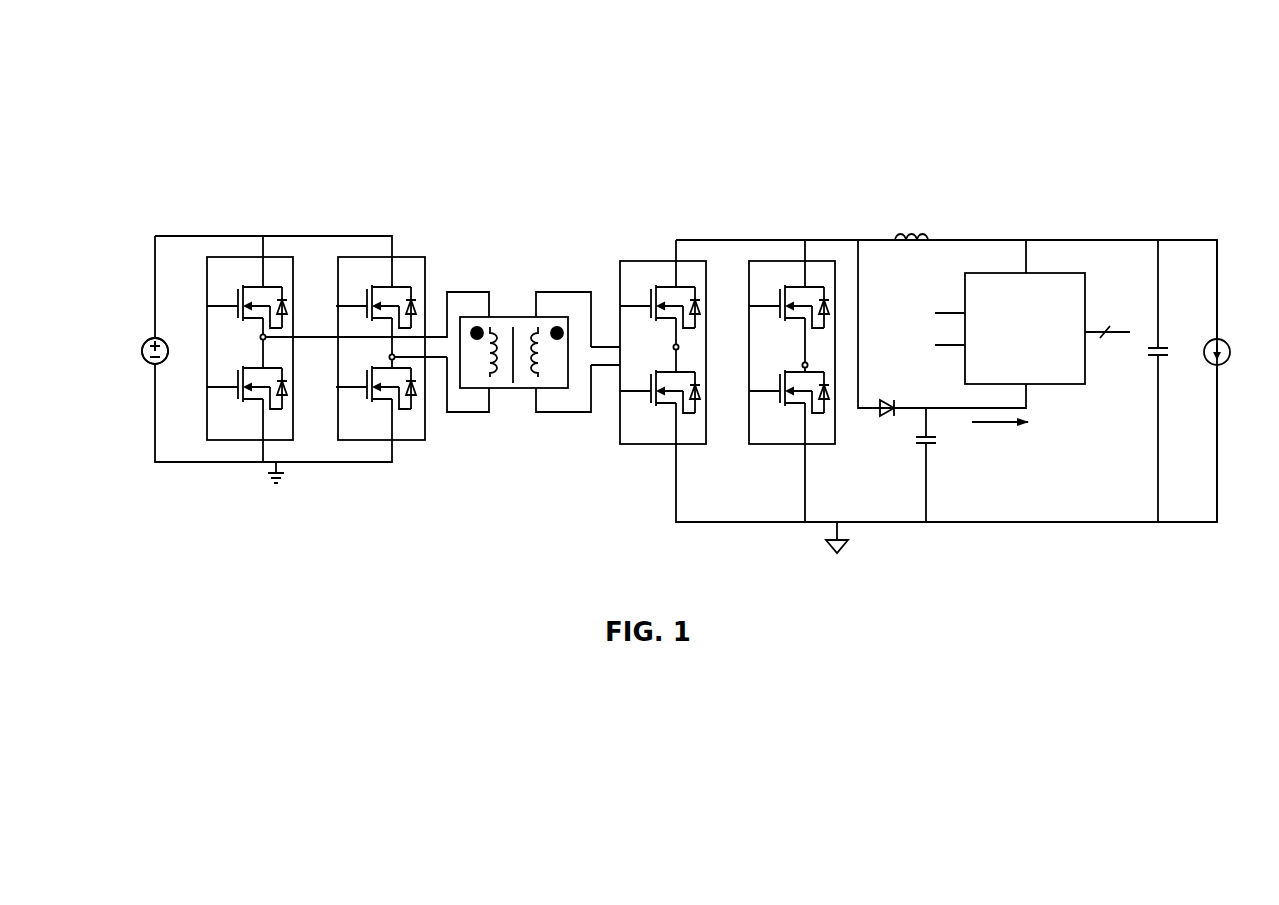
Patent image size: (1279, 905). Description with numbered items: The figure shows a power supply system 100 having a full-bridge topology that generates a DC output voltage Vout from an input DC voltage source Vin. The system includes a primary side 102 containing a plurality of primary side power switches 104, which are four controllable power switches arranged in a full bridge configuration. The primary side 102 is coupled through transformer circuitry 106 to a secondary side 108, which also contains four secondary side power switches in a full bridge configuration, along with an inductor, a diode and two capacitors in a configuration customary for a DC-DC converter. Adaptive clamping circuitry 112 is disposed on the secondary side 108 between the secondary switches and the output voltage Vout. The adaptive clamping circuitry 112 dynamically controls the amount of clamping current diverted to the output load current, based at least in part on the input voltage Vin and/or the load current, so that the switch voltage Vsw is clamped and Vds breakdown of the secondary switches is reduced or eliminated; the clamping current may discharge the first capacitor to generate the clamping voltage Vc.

The power supply system 100 is at (86, 72).
The primary side 102 is at (232, 203).
The primary side power switches 104 is at (246, 444).
The transformer circuitry 106 is at (522, 296).
The secondary side 108 is at (699, 204).
The adaptive clamping circuitry 112 is at (1056, 394).